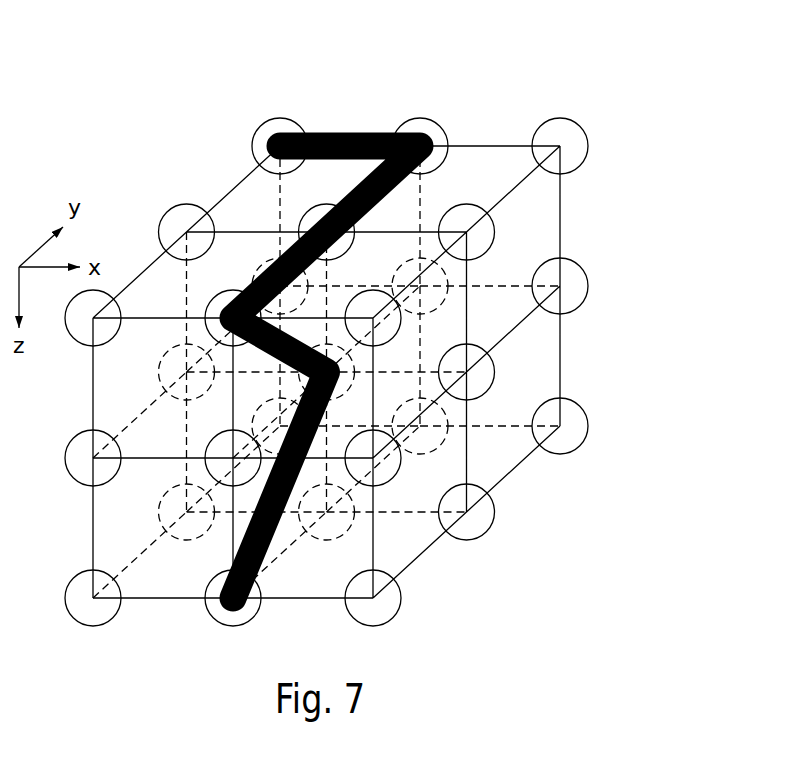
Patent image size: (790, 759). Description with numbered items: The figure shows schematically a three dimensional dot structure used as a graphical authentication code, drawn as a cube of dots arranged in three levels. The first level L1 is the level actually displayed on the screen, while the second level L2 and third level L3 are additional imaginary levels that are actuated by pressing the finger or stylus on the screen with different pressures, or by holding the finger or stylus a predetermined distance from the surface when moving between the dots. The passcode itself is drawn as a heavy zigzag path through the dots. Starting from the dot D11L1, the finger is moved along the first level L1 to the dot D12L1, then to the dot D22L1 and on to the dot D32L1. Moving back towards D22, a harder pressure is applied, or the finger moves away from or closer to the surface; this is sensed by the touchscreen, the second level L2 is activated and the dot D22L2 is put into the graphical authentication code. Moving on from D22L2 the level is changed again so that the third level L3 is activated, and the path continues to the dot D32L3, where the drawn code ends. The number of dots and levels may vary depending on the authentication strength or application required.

The dot D11 of first level D11L1 is at (267, 118).
The dot D12 of first level D12L1 is at (430, 117).
The dot D22 of first level D22L1 is at (300, 213).
The dot D32 of first level D32L1 is at (218, 288).
The dot D22 of second level D22L2 is at (355, 380).
The dot D32 of third level D32L3 is at (208, 617).
The first level L1 is at (605, 146).
The second level L2 is at (605, 286).
The third level L3 is at (605, 426).